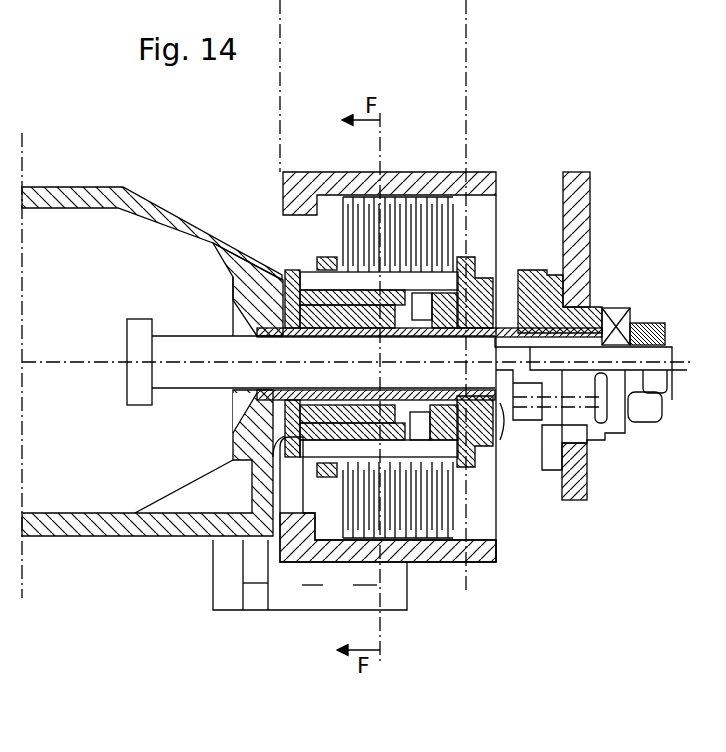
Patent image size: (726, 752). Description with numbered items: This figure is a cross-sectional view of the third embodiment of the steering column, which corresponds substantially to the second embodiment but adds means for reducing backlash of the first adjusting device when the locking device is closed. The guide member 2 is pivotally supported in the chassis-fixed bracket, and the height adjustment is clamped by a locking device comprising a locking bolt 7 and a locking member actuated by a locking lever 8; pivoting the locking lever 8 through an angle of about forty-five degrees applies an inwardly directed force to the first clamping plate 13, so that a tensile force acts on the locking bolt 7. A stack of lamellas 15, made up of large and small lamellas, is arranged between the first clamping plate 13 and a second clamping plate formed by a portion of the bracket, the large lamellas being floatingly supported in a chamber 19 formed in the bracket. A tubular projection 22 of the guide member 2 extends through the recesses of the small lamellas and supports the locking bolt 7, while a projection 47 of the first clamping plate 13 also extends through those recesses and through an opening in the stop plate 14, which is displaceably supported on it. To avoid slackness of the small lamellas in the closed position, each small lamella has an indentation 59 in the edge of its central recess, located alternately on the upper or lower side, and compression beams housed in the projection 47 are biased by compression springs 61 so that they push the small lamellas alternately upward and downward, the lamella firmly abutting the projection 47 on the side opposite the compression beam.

The guide member 2 is at (147, 212).
The locking bolt 7 is at (183, 350).
The locking lever 8 is at (582, 217).
The first clamping plate 13 is at (497, 458).
The stop plate 14 is at (332, 470).
The stack of lamellas 15 is at (460, 505).
The chamber 19 is at (465, 528).
The tubular projection 22 is at (363, 300).
The projection 47 is at (300, 265).
The indentation 59 is at (458, 268).
The compression springs 61 is at (480, 268).